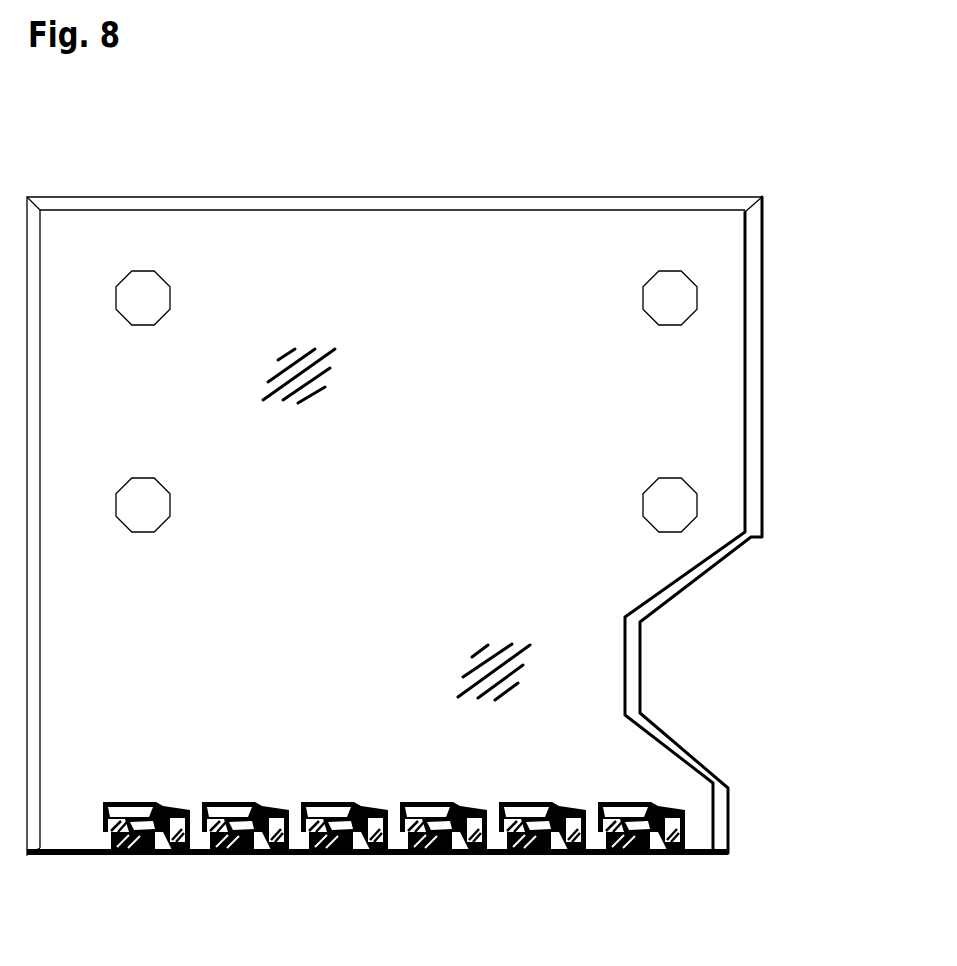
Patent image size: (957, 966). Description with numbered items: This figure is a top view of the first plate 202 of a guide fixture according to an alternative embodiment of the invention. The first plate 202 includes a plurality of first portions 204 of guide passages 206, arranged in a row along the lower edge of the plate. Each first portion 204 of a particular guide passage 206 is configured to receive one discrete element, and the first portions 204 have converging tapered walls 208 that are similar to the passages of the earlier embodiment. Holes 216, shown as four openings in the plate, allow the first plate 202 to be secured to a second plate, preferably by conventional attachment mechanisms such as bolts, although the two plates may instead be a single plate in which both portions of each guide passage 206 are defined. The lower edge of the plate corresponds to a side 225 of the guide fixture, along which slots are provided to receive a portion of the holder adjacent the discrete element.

The first plate 202 is at (790, 344).
The first portion of guide passage 204 is at (445, 834).
The guide passage 206 is at (555, 837).
The converging tapered walls 208 is at (633, 807).
The holes 216 is at (144, 272).
The side of the guide fixture 225 is at (84, 856).